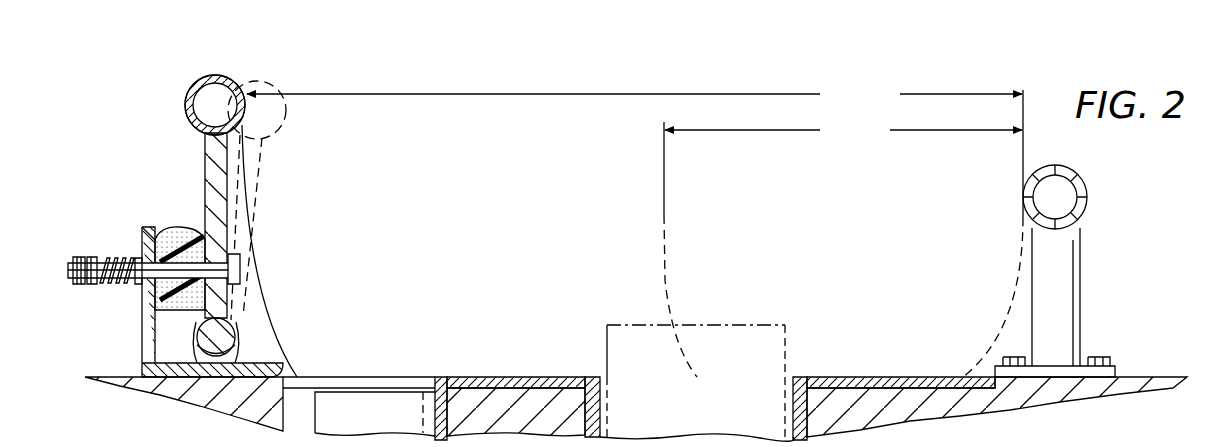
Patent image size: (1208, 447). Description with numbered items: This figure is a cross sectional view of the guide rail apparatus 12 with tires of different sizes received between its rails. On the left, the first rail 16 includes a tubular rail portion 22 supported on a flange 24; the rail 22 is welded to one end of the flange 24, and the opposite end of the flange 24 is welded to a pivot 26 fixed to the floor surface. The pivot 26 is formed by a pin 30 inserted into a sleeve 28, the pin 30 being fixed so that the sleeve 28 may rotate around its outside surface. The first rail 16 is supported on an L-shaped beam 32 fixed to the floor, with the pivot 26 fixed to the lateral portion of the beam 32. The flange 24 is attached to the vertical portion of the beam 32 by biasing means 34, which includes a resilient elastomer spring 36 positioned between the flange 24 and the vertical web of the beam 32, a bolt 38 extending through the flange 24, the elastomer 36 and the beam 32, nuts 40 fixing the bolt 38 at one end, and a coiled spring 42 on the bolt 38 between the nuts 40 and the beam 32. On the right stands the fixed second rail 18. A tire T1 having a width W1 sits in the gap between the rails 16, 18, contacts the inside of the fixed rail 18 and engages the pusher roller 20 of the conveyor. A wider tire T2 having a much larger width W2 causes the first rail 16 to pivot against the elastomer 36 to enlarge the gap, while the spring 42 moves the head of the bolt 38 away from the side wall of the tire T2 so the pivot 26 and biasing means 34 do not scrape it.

The guide rail apparatus 12 is at (224, 207).
The first rail 16 is at (183, 101).
The tubular rail portion 22 is at (195, 120).
The flange 24 is at (206, 185).
The pin 30 is at (233, 328).
The biasing means 34 is at (180, 287).
The L-shaped beam 32 is at (146, 330).
The resilient elastomer spring 36 is at (180, 206).
The bolt 38 is at (234, 270).
The nuts 40 is at (78, 285).
The coiled spring 42 is at (118, 286).
The pivot 26 is at (178, 351).
The sleeve 28 is at (236, 344).
The pusher roller 20 is at (767, 336).
The second rail 18 is at (1081, 181).
The tire T1 is at (660, 216).
The wider tire T2 is at (255, 292).
The width W1 is at (843, 153).
The width W2 is at (634, 97).